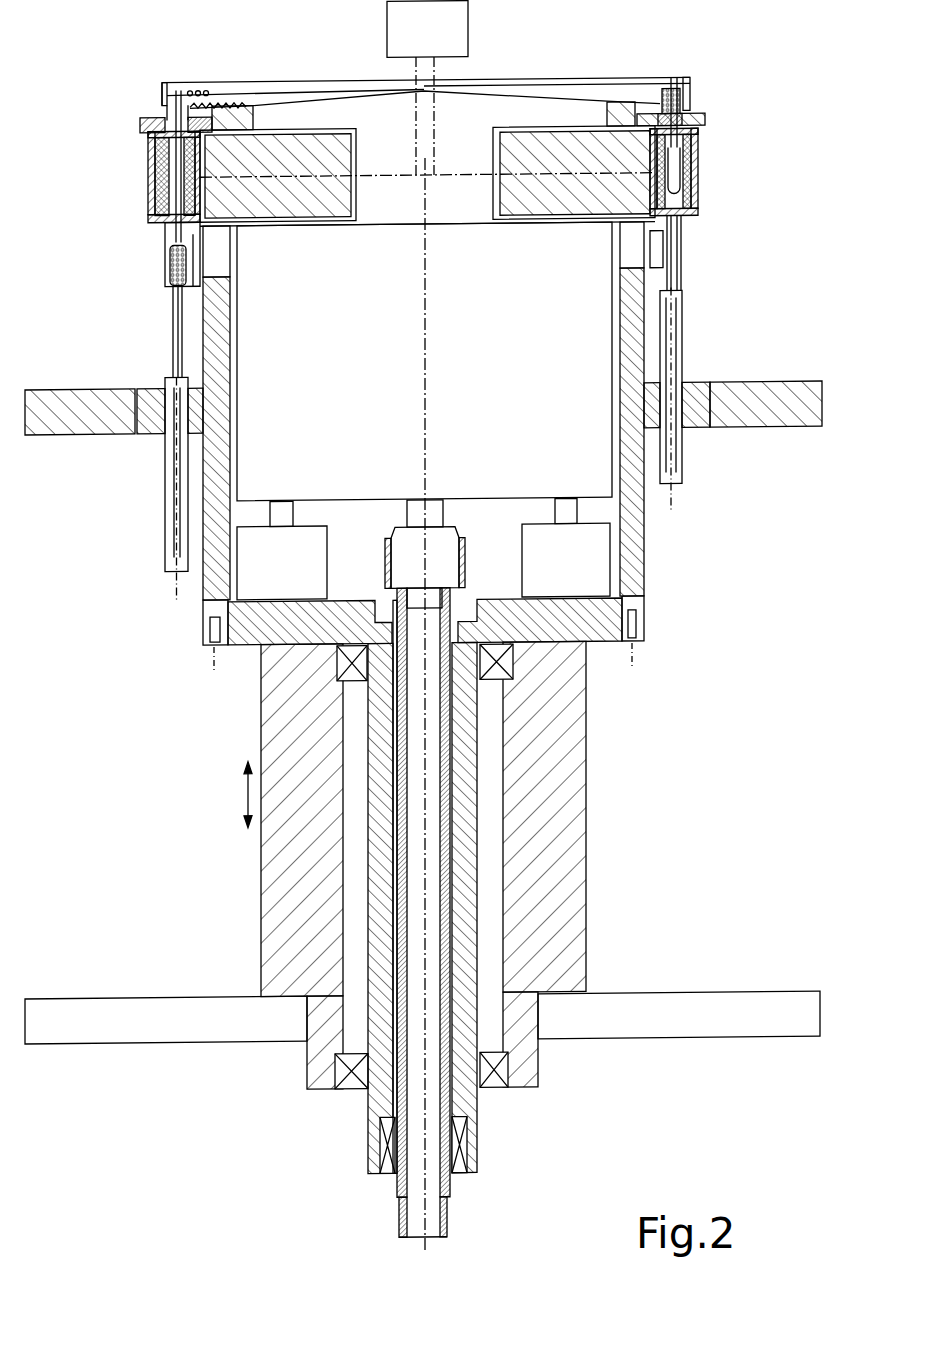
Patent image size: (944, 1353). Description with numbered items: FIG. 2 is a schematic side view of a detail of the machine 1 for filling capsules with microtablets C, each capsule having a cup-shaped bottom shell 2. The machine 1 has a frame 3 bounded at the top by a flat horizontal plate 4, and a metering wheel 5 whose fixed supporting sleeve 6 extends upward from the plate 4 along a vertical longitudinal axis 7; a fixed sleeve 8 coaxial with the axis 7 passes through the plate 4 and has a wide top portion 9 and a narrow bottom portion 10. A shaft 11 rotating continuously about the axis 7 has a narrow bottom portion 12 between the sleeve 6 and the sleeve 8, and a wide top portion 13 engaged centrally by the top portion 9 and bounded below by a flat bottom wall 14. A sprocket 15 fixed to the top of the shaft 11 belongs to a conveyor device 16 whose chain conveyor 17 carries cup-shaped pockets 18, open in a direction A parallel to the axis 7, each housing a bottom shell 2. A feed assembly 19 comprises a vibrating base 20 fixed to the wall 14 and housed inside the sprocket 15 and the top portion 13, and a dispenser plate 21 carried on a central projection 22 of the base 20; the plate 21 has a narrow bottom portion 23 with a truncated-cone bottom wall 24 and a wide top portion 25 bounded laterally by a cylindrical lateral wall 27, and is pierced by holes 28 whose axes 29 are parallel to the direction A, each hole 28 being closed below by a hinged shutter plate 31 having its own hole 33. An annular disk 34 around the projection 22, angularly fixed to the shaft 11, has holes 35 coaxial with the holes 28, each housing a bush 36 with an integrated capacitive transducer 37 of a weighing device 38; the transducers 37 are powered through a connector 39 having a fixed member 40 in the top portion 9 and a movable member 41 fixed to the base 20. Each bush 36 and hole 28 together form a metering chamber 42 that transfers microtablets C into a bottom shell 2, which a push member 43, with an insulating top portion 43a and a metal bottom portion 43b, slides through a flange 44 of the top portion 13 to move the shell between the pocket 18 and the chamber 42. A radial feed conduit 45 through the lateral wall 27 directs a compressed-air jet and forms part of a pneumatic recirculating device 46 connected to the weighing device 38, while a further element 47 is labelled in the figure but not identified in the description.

The machine 1 is at (722, 56).
The bottom shell 2 is at (171, 252).
The frame 3 is at (90, 1068).
The plate 4 is at (166, 1042).
The metering wheel 5 is at (120, 644).
The supporting sleeve 6 is at (262, 888).
The longitudinal axis 7 is at (425, 1247).
The fixed sleeve 8 is at (398, 1182).
The wide top portion 9 is at (454, 566).
The narrow bottom portion 10 is at (431, 1199).
The shaft 11 is at (371, 1100).
The narrow bottom portion 12 is at (394, 1068).
The wide top portion 13 is at (234, 484).
The bottom wall 14 is at (592, 634).
The sprocket 15 is at (641, 268).
The conveyor device 16 is at (115, 280).
The chain conveyor 17 is at (179, 312).
The pockets 18 is at (171, 284).
The feed assembly 19 is at (646, 67).
The vibrating base 20 is at (581, 482).
The dispenser plate 21 is at (581, 78).
The central projection 22 is at (459, 207).
The narrow bottom portion 23 is at (659, 99).
The bottom wall 24 is at (306, 96).
The wide top portion 25 is at (683, 83).
The lateral wall 27 is at (164, 78).
The holes 28 is at (186, 113).
The longitudinal axes 29 is at (176, 592).
The shutter plate 31 is at (210, 115).
The hole 33 is at (150, 162).
The annular disk 34 is at (537, 150).
The holes 35 is at (190, 214).
The bush 36 is at (656, 212).
The capacitive transducer 37 is at (688, 193).
The weighing device 38 is at (413, 37).
The connector 39 is at (388, 514).
The fixed member 40 is at (402, 562).
The movable member 41 is at (418, 506).
The metering chamber 42 is at (185, 186).
The push member 43 is at (153, 568).
The top portion 43a is at (174, 352).
The bottom portion 43b is at (173, 520).
The flange 44 is at (150, 433).
The radial feed conduit 45 is at (160, 85).
The pneumatic recirculating device 46 is at (148, 95).
The flange 47 is at (140, 128).
The microtablets C is at (190, 88).
The direction A is at (237, 795).